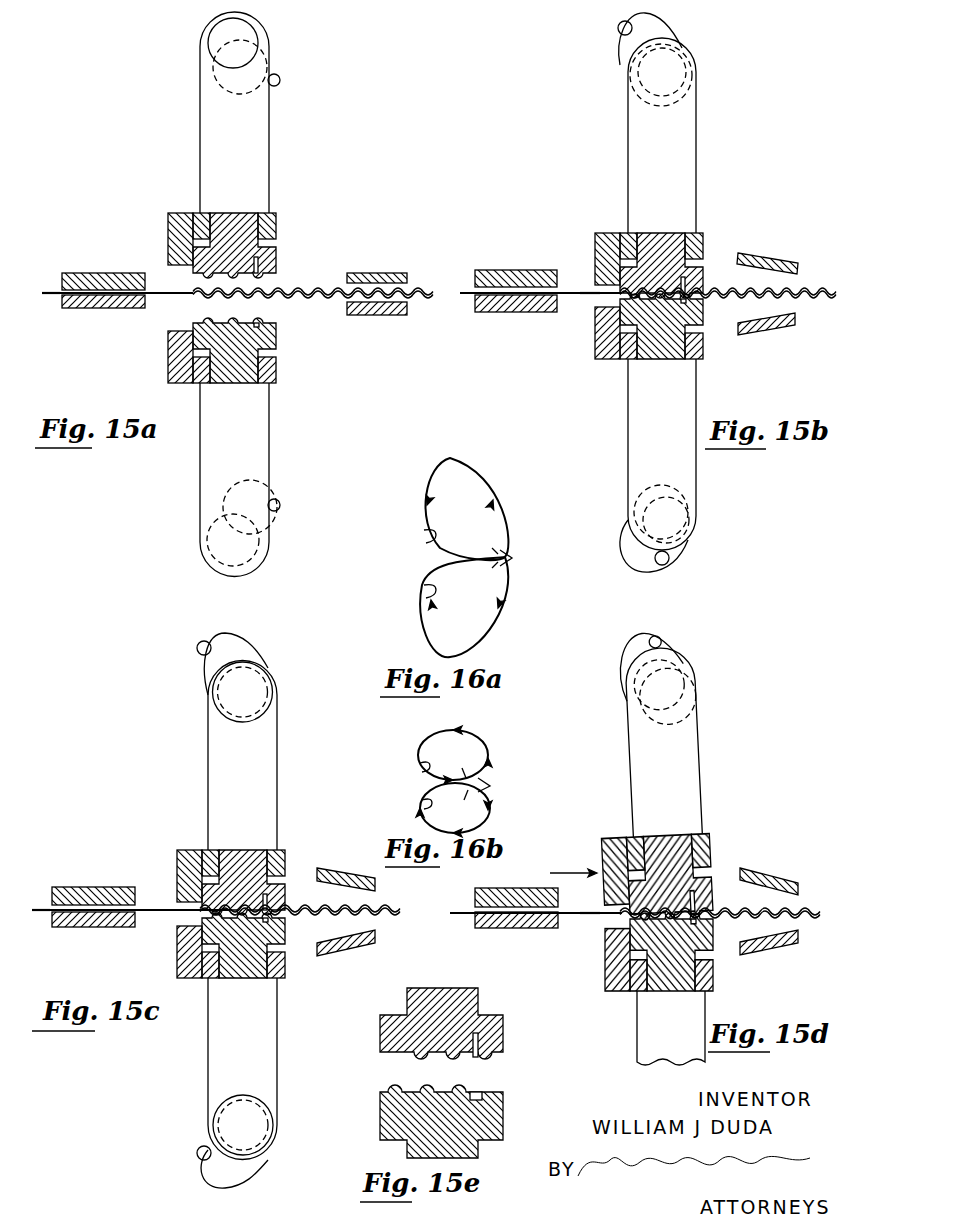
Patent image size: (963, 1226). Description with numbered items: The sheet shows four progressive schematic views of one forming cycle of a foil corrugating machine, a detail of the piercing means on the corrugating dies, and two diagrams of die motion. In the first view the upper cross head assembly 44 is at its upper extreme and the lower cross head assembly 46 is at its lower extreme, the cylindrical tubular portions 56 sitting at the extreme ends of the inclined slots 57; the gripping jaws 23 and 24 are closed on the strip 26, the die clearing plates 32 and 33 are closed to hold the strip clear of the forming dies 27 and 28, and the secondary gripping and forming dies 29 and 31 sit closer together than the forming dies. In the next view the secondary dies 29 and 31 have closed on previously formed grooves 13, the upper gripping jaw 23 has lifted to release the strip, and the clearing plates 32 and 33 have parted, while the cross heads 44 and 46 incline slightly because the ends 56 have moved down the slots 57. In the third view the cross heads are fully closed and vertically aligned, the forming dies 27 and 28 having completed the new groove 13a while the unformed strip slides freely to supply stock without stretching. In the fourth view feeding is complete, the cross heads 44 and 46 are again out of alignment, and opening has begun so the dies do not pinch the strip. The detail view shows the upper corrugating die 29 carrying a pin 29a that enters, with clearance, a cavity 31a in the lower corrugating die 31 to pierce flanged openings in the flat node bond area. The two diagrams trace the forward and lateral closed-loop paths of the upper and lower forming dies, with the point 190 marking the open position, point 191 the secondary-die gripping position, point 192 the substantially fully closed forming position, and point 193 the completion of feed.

In FIG. 15A, the grooves 13 is at (315, 291).
In FIG. 15B, the grooves 13 is at (718, 296).
In FIG. 15C, the grooves 13 is at (298, 909).
In FIG. 15D, the grooves 13 is at (734, 910).
In FIG. 15C, the groove 13a is at (182, 922).
In FIG. 15A, the upper gripping jaw 23 is at (100, 273).
In FIG. 15B, the upper gripping jaw 23 is at (518, 270).
In FIG. 15C, the upper gripping jaw 23 is at (95, 887).
In FIG. 15D, the upper gripping jaw 23 is at (548, 890).
In FIG. 15A, the lower gripping jaw 24 is at (100, 308).
In FIG. 15B, the lower gripping jaw 24 is at (508, 312).
In FIG. 15C, the lower gripping jaw 24 is at (93, 927).
In FIG. 15D, the lower gripping jaw 24 is at (522, 928).
In FIG. 15A, the strip 26 is at (45, 292).
In FIG. 15B, the strip 26 is at (590, 298).
In FIG. 15C, the strip 26 is at (42, 908).
In FIG. 15D, the strip 26 is at (588, 920).
In FIG. 15A, the upper forming die 27 is at (168, 222).
In FIG. 15B, the upper forming die 27 is at (604, 232).
In FIG. 15C, the upper forming die 27 is at (177, 860).
In FIG. 15D, the upper forming die 27 is at (605, 840).
In FIG. 15A, the lower forming die 28 is at (168, 355).
In FIG. 15B, the lower forming die 28 is at (595, 346).
In FIG. 15C, the lower forming die 28 is at (177, 962).
In FIG. 15D, the lower forming die 28 is at (605, 988).
In FIG. 15A, the upper secondary gripping and forming die 29 is at (278, 252).
In FIG. 15B, the upper secondary gripping and forming die 29 is at (705, 272).
In FIG. 15C, the upper secondary gripping and forming die 29 is at (286, 872).
In FIG. 15D, the upper secondary gripping and forming die 29 is at (716, 882).
In FIG. 15E, the upper secondary gripping and forming die 29 is at (503, 1032).
In FIG. 15E, the pin 29a is at (480, 1060).
In FIG. 15A, the lower secondary gripping and forming die 31 is at (278, 343).
In FIG. 15B, the lower secondary gripping and forming die 31 is at (704, 320).
In FIG. 15C, the lower secondary gripping and forming die 31 is at (287, 942).
In FIG. 15D, the lower secondary gripping and forming die 31 is at (714, 946).
In FIG. 15E, the lower secondary gripping and forming die 31 is at (503, 1130).
In FIG. 15E, the cavity 31a is at (475, 1092).
In FIG. 15A, the upper die clearing plate 32 is at (372, 273).
In FIG. 15B, the upper die clearing plate 32 is at (775, 258).
In FIG. 15C, the upper die clearing plate 32 is at (340, 868).
In FIG. 15D, the upper die clearing plate 32 is at (780, 880).
In FIG. 15A, the lower die clearing plate 33 is at (365, 315).
In FIG. 15B, the lower die clearing plate 33 is at (770, 328).
In FIG. 15C, the lower die clearing plate 33 is at (338, 955).
In FIG. 15D, the lower die clearing plate 33 is at (790, 950).
In FIG. 15A, the upper cross head assembly 44 is at (198, 146).
In FIG. 15B, the upper cross head assembly 44 is at (624, 146).
In FIG. 15C, the upper cross head assembly 44 is at (207, 775).
In FIG. 15D, the upper cross head assembly 44 is at (708, 795).
In FIG. 15A, the lower cross head assembly 46 is at (272, 452).
In FIG. 15B, the lower cross head assembly 46 is at (626, 425).
In FIG. 15C, the lower cross head assembly 46 is at (278, 1040).
In FIG. 15D, the lower cross head assembly 46 is at (708, 1030).
In FIG. 15A, the tubular portion 56 is at (218, 75).
In FIG. 15B, the tubular portion 56 is at (690, 88).
In FIG. 15C, the tubular portion 56 is at (266, 708).
In FIG. 15D, the tubular portion 56 is at (702, 706).
In FIG. 15A, the inclined slot 57 is at (278, 79).
In FIG. 15B, the inclined slot 57 is at (626, 31).
In FIG. 15C, the inclined slot 57 is at (200, 650).
In FIG. 15D, the inclined slot 57 is at (675, 644).
In FIG. 16A, the point 190 is at (450, 458).
In FIG. 16B, the point 190 is at (458, 731).
In FIG. 16A, the point 191 is at (426, 533).
In FIG. 16B, the point 191 is at (424, 803).
In FIG. 16A, the point 192 is at (500, 553).
In FIG. 16B, the point 192 is at (459, 779).
In FIG. 16A, the point 193 is at (512, 562).
In FIG. 16B, the point 193 is at (488, 783).